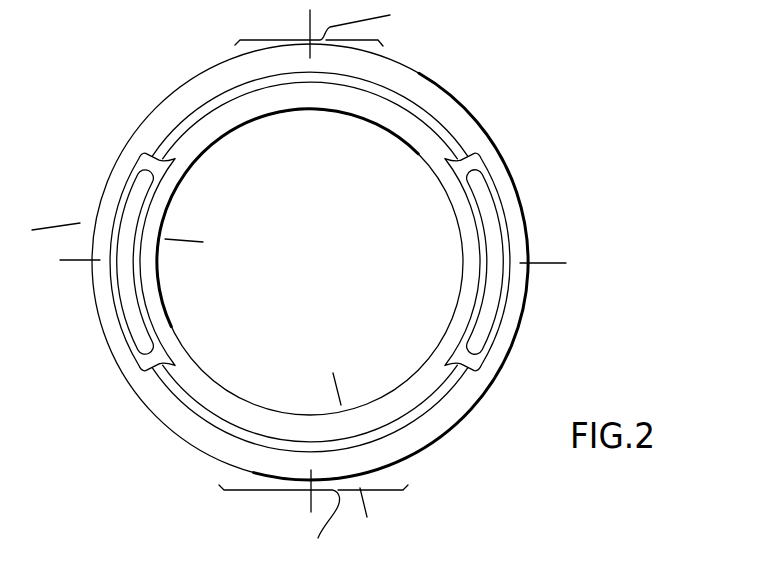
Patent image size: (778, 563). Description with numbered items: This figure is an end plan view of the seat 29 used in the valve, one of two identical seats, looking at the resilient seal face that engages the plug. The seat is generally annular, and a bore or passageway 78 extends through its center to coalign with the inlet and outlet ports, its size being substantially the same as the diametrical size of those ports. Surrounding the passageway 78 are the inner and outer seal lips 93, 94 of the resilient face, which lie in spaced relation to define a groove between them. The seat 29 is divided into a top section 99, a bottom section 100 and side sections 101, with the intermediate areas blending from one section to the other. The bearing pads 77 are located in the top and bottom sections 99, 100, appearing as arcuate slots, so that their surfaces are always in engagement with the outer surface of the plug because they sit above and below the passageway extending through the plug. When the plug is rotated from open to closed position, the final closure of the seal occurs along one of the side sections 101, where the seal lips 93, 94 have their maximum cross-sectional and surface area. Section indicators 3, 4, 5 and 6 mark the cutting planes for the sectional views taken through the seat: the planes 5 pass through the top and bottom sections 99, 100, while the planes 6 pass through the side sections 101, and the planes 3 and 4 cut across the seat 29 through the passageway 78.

The seat 29 is at (426, 72).
The bearing pads 77 is at (130, 207).
The bore or passageway 78 is at (392, 138).
The inner seal lip 93 is at (210, 397).
The outer seal lip 94 is at (197, 437).
The top section 99 is at (90, 193).
The bottom section 100 is at (534, 335).
The side sections 101 is at (326, 284).
The section line 3- 3 is at (60, 244).
The section line 4- 4 is at (325, 18).
The section line 5- 5 is at (34, 202).
The section line 6- 6 is at (352, 371).